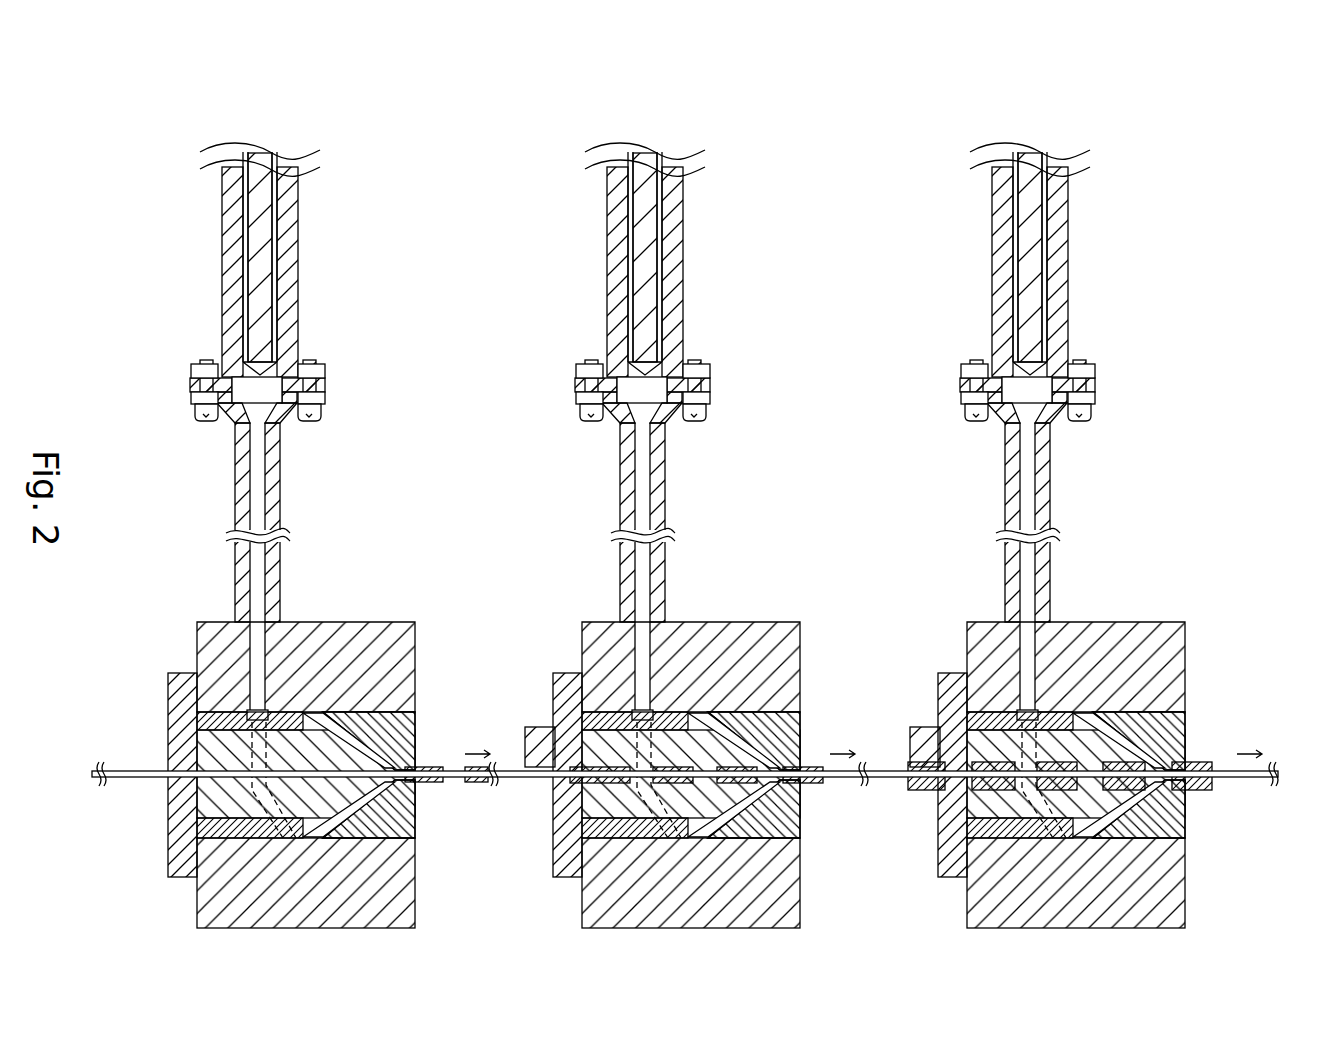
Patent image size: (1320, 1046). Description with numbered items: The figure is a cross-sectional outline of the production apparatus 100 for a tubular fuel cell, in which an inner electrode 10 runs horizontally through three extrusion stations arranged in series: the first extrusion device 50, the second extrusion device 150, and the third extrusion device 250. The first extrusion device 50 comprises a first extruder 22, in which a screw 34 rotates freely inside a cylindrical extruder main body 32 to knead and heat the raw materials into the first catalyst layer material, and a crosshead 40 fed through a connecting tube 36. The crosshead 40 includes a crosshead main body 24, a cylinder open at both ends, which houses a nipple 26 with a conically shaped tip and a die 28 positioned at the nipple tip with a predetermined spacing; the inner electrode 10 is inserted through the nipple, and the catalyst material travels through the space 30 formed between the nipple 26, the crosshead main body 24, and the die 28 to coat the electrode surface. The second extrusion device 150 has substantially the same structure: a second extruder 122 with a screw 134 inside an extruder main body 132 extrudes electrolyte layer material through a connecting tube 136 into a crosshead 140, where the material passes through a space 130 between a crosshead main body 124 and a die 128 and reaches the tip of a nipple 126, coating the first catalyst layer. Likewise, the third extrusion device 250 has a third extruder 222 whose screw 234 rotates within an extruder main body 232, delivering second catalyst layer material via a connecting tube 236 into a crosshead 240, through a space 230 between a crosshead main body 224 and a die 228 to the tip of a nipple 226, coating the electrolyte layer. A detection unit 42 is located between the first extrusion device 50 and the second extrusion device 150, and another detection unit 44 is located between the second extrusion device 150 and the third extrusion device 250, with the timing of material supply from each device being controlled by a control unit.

The inner electrode 10 is at (114, 770).
The first extruder 22 is at (213, 247).
The crosshead main body 24 is at (358, 640).
The nipple 26 is at (395, 702).
The die 28 is at (418, 740).
The space 30 is at (345, 745).
The extruder main body 32 is at (290, 224).
The screw 34 is at (250, 217).
The connecting tube 36 is at (280, 468).
The crosshead 40 is at (190, 912).
The detection unit 42 is at (536, 697).
The detection unit 44 is at (921, 697).
The first extrusion device 50 is at (395, 168).
The production apparatus 100 is at (1254, 146).
The second extruder 122 is at (642, 382).
The crosshead main body 124 is at (692, 643).
The nipple 126 is at (721, 722).
The die 128 is at (730, 763).
The space 130 is at (784, 749).
The extruder main body 132 is at (685, 260).
The screw 134 is at (582, 257).
The connecting tube 136 is at (684, 522).
The crosshead 140 is at (641, 891).
The second extrusion device 150 is at (681, 524).
The third extruder 222 is at (1025, 382).
The crosshead main body 224 is at (1083, 647).
The nipple 226 is at (1111, 727).
The die 228 is at (1127, 772).
The space 230 is at (1181, 754).
The extruder main body 232 is at (1069, 260).
The screw 234 is at (967, 257).
The connecting tube 236 is at (1069, 522).
The crosshead 240 is at (1026, 891).
The third extrusion device 250 is at (1078, 524).